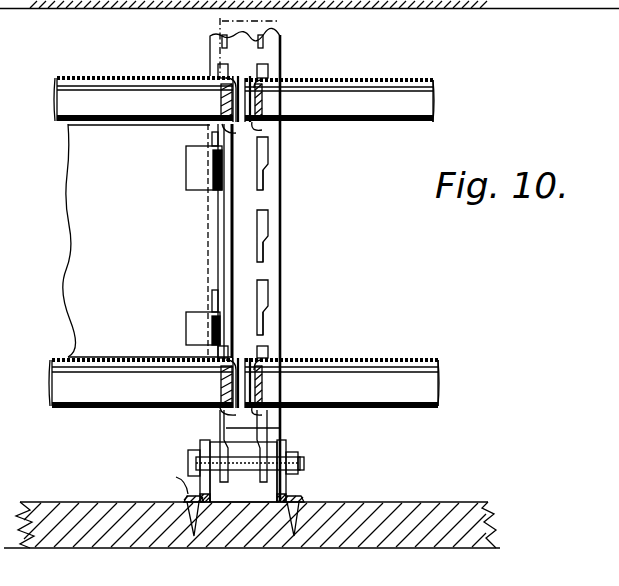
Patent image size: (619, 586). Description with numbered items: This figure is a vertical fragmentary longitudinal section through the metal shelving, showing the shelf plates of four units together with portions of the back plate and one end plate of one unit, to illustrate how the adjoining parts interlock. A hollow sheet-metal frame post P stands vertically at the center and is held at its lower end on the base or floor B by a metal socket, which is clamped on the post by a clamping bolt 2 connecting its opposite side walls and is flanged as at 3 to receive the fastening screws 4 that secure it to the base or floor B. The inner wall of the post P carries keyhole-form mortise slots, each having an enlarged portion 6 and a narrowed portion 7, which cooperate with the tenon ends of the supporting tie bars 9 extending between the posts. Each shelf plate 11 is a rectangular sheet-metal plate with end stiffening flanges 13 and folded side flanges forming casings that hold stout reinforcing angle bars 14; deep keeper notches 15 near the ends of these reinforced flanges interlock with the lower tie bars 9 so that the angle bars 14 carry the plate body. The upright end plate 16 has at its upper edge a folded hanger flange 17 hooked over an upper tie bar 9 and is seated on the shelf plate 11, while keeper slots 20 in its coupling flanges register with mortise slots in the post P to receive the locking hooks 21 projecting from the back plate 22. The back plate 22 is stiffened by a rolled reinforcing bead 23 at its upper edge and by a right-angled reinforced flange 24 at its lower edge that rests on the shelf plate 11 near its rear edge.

The frame post P is at (210, 41).
The base or floor B is at (100, 510).
The clamping bolt 2 is at (238, 470).
The flange 3 is at (184, 498).
The fastening screw 4 is at (173, 481).
The enlarged portion 6 is at (218, 68).
The narrowed portion 7 is at (258, 178).
The supporting tie bar 9 is at (222, 134).
The shelf plate 11 is at (126, 76).
The end stiffening flange 13 is at (245, 242).
The reinforcing angle bar 14 is at (64, 76).
The keeper notch 15 is at (270, 104).
The end plate 16 is at (232, 226).
The hanger flange 17 is at (221, 100).
The keeper slot 20 is at (222, 166).
The locking hook 21 is at (212, 190).
The back plate 22 is at (94, 240).
The rolled reinforcing bead 23 is at (98, 128).
The reinforced flange 24 is at (152, 358).